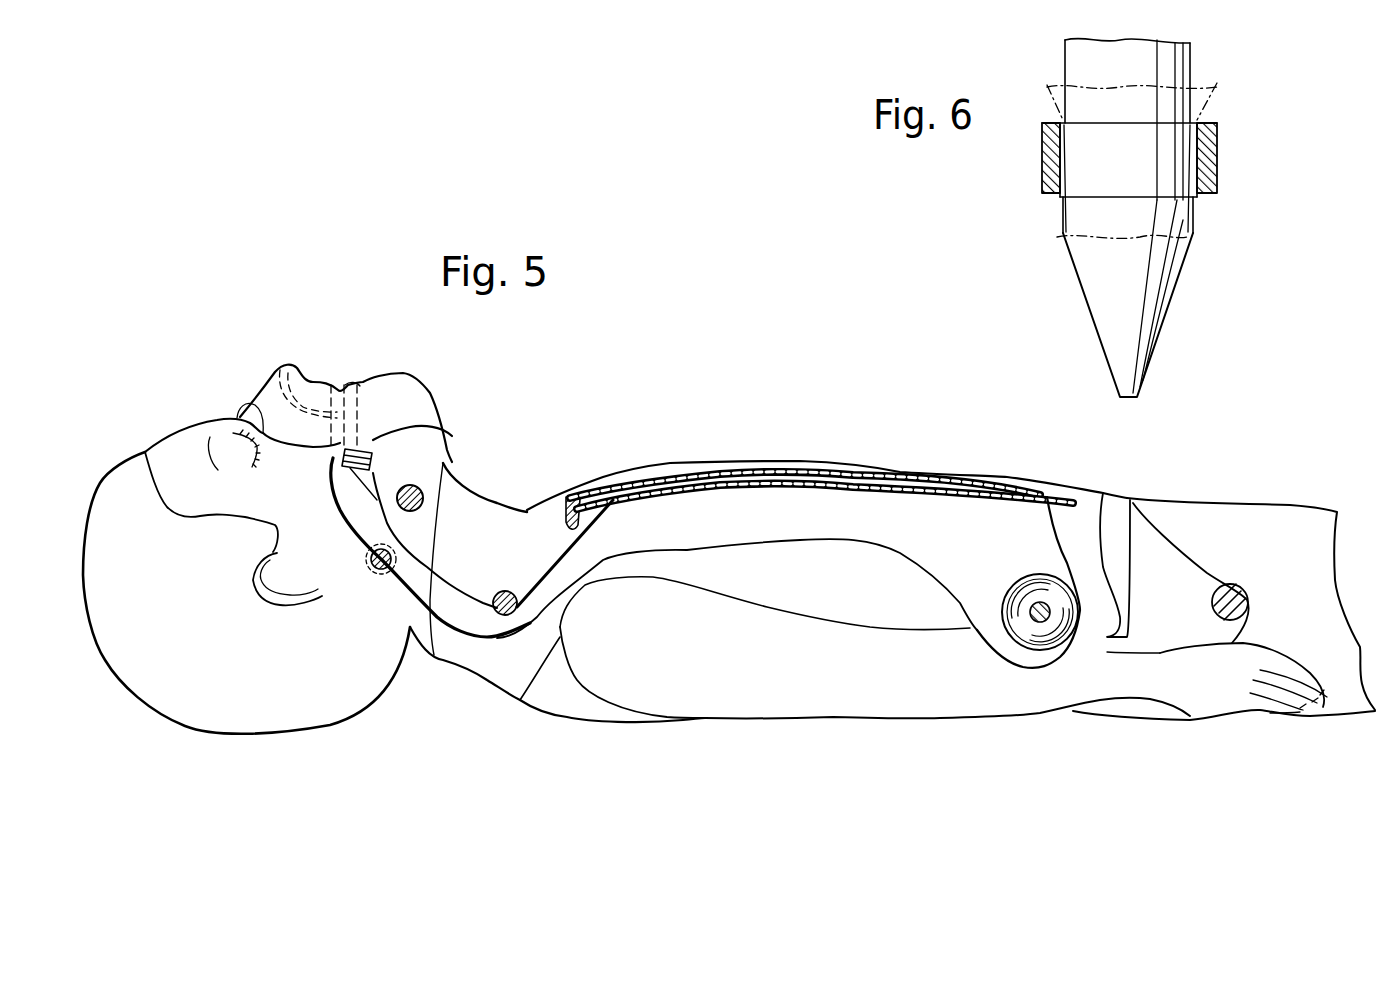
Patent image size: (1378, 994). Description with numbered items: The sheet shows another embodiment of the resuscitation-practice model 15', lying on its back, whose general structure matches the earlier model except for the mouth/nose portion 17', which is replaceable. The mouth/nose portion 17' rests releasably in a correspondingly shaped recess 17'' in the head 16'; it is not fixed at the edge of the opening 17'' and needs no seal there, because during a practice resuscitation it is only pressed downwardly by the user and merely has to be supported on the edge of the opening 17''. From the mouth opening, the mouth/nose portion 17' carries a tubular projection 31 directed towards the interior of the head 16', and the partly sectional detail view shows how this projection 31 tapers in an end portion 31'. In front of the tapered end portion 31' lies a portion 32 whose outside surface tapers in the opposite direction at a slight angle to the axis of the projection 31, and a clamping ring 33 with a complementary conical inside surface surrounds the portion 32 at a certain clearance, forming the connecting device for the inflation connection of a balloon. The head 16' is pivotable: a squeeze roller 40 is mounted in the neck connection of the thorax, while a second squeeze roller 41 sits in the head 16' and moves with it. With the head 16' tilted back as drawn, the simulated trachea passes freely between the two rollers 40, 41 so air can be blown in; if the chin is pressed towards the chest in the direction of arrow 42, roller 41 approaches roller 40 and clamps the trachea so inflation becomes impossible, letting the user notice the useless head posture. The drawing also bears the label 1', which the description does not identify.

In FIG. 5, the strap / elongated band 1' is at (472, 547).
In FIG. 6, the strap / elongated band 1' is at (1162, 138).
In FIG. 5, the model 15' is at (892, 629).
In FIG. 5, the head 16' is at (246, 601).
In FIG. 5, the mouth/nose portion 17' is at (326, 398).
In FIG. 5, the recess 17'' is at (206, 408).
In FIG. 5, the tubular projection 31 is at (421, 449).
In FIG. 6, the tapered end portion 31' is at (1114, 298).
In FIG. 6, the portion 32 is at (1093, 183).
In FIG. 6, the clamping ring 33 is at (1043, 150).
In FIG. 5, the squeeze roller 40 is at (423, 498).
In FIG. 5, the squeeze roller 41 is at (382, 575).
In FIG. 5, the arrow 42 is at (450, 397).